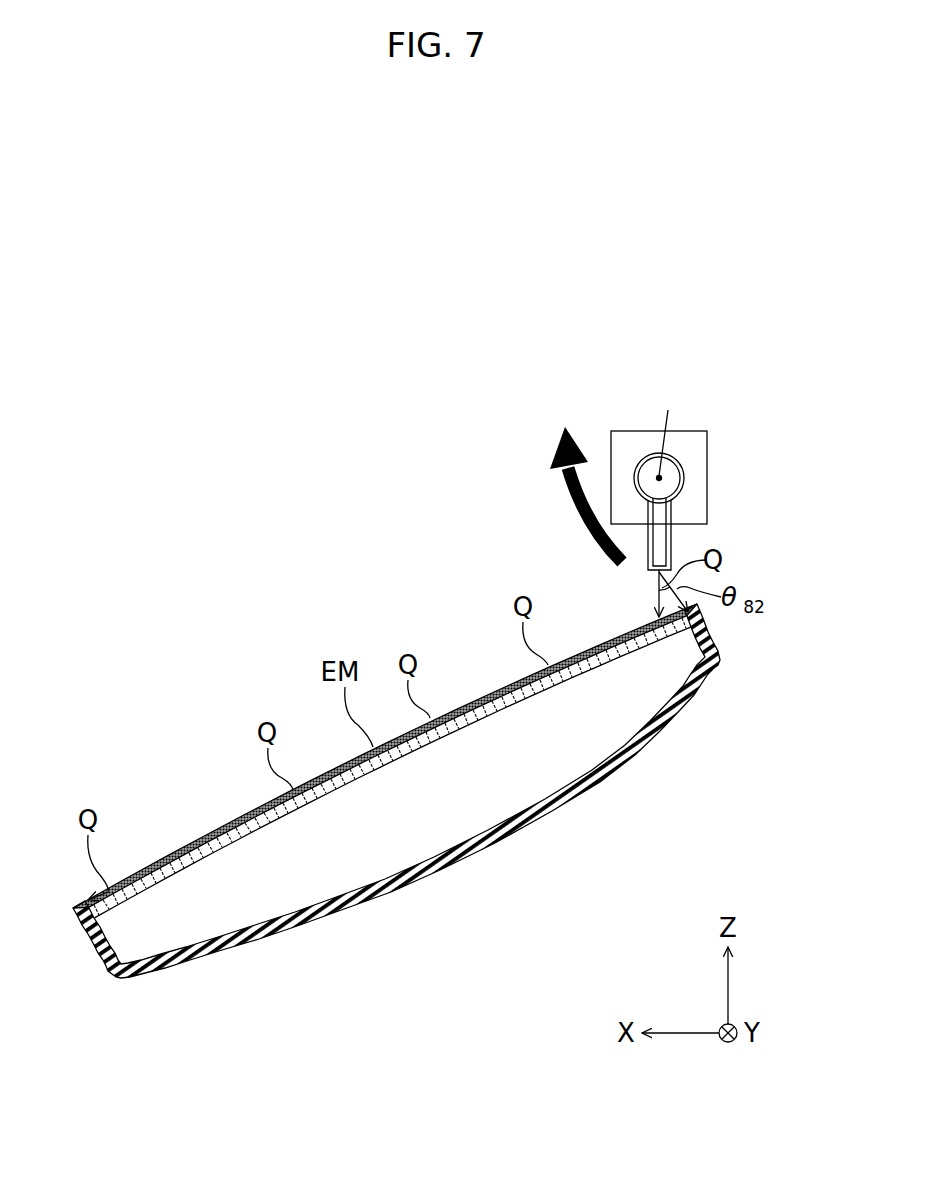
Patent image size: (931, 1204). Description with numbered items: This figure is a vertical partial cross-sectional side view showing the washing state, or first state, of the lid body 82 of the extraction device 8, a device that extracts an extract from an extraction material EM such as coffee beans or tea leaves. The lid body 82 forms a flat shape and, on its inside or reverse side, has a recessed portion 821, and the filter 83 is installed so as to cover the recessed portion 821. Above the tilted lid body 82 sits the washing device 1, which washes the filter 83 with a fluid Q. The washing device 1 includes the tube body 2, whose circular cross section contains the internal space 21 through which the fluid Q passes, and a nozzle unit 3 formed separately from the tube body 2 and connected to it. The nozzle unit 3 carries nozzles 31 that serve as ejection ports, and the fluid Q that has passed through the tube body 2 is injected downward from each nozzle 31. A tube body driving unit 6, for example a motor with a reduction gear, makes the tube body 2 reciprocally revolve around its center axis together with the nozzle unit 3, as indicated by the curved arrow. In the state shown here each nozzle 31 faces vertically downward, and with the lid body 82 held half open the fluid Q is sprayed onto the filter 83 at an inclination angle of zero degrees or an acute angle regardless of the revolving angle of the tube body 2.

The washing device 1 is at (689, 499).
The tube body 2 is at (702, 470).
The internal space 21 is at (672, 478).
The nozzle unit 3 is at (673, 544).
The nozzle 31 is at (656, 590).
The tube body driving unit 6 is at (708, 430).
The extraction device 8 is at (436, 791).
The lid body 82 is at (723, 669).
The recessed portion 821 is at (437, 823).
The filter 83 is at (225, 832).